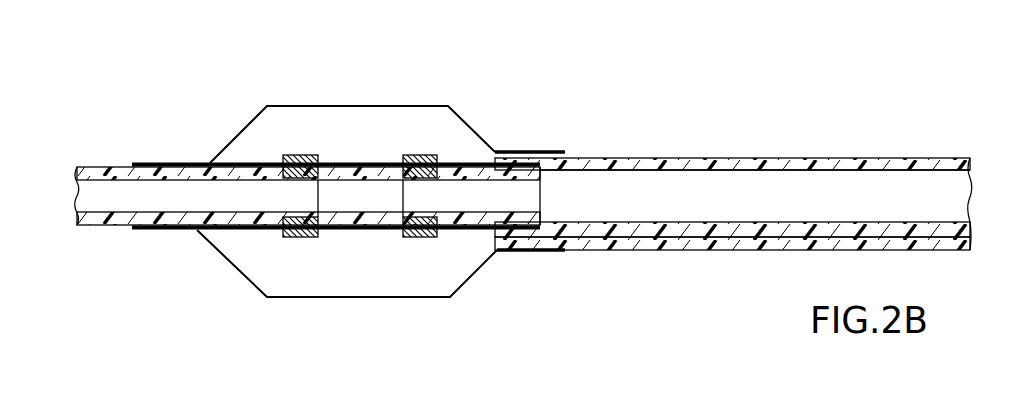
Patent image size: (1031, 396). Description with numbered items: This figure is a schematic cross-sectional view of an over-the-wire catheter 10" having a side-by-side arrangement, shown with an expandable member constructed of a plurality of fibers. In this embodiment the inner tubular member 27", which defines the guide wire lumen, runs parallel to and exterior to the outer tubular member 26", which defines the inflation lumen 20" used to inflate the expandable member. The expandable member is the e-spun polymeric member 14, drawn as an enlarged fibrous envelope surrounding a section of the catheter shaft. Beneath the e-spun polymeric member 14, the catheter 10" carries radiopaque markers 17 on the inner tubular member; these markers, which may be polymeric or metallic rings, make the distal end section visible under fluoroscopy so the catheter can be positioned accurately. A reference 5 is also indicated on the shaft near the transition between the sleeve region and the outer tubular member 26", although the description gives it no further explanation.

The transition/position marker 5 is at (537, 152).
The over-the-wire catheter 10 is at (527, 118).
The e-spun polymeric member 14 is at (398, 104).
The radiopaque markers 17 is at (420, 240).
The inflation lumen 20 is at (858, 158).
The outer tubular member 26 is at (699, 146).
The inner tubular member 27 is at (958, 176).